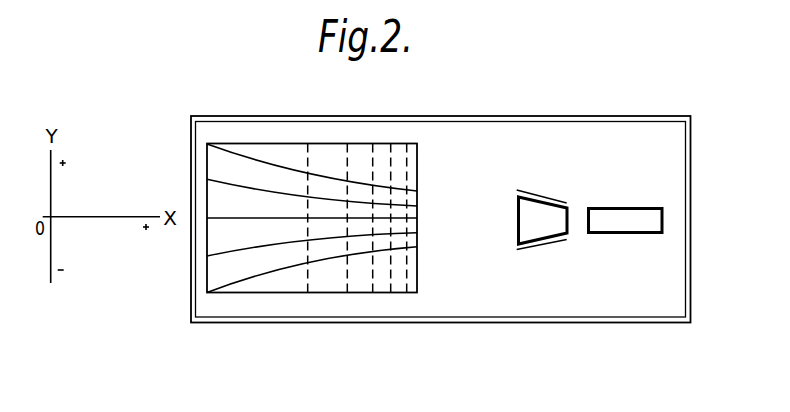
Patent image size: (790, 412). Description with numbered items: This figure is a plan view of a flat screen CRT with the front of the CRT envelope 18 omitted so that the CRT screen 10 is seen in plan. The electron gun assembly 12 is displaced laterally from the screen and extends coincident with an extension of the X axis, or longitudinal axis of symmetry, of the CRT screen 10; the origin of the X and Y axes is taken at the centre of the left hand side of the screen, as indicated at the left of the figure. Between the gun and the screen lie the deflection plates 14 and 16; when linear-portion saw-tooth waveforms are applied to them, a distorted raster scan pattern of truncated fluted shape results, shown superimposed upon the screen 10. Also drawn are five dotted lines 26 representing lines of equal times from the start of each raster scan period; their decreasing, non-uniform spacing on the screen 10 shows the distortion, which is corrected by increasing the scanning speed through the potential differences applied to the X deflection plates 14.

The CRT screen 10 is at (238, 286).
The electron gun assembly 12 is at (629, 213).
The X deflection plates 14 is at (532, 205).
The deflection plates 16 is at (555, 197).
The CRT envelope 18 is at (258, 118).
The dotted lines 26 is at (309, 160).